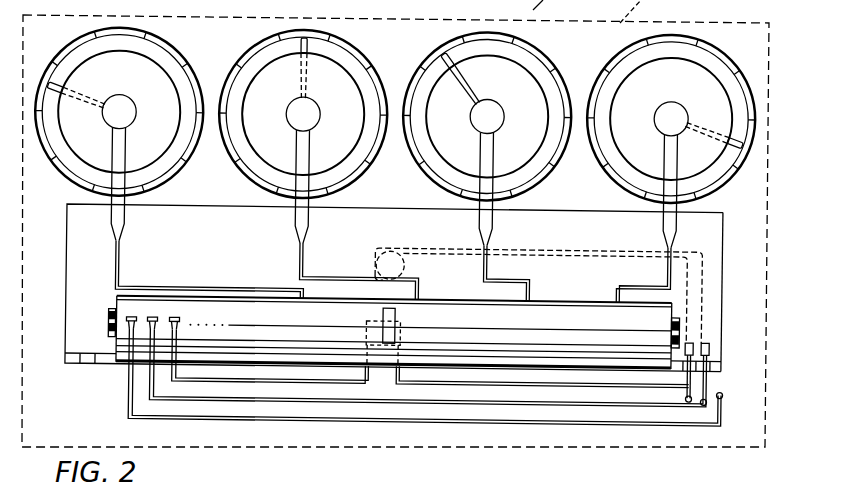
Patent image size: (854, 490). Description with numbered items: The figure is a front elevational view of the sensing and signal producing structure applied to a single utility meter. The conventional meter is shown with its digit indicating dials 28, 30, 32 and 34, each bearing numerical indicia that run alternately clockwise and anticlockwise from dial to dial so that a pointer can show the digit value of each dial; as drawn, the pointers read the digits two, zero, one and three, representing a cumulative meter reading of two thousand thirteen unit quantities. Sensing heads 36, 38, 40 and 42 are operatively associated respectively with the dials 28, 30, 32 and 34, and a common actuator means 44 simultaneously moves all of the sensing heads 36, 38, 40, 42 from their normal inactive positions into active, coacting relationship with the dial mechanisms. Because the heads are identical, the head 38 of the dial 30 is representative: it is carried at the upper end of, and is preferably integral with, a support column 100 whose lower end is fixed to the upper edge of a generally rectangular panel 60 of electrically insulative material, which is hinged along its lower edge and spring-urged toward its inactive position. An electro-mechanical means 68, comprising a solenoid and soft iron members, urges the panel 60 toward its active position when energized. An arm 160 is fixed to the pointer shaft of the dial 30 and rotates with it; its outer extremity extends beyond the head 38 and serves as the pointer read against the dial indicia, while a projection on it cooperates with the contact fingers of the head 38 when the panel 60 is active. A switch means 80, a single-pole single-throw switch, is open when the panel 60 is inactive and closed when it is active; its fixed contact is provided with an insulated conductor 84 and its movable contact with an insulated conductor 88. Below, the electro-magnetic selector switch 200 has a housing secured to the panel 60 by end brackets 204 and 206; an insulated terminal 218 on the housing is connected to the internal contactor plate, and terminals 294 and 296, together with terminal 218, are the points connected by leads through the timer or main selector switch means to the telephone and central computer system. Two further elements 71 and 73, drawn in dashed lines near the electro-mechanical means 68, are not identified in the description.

The digit indicating dial 28 is at (166, 37).
The digit indicating dial 30 is at (358, 49).
The digit indicating dial 32 is at (537, 44).
The digit indicating dial 34 is at (726, 46).
The sensing head 36 is at (149, 149).
The sensing head 38 is at (339, 148).
The sensing head 40 is at (524, 149).
The sensing head 42 is at (707, 147).
The support column 100 is at (304, 157).
The arm 160 is at (308, 75).
The electro-magnetic selector switch 200 is at (236, 270).
The end bracket 204 is at (114, 311).
The end bracket 206 is at (674, 309).
The electro-mechanical means 68 is at (363, 261).
The conductor 71 is at (538, 281).
The conductor 73 is at (529, 247).
The switch means 80 is at (371, 309).
The insulated electric conductor 84 is at (367, 331).
The insulated conductor 88 is at (407, 333).
The panel 60 is at (717, 229).
The common actuator means 44 is at (735, 301).
The insulated terminal 218 is at (724, 387).
The terminal 294 is at (709, 396).
The terminal 296 is at (689, 393).